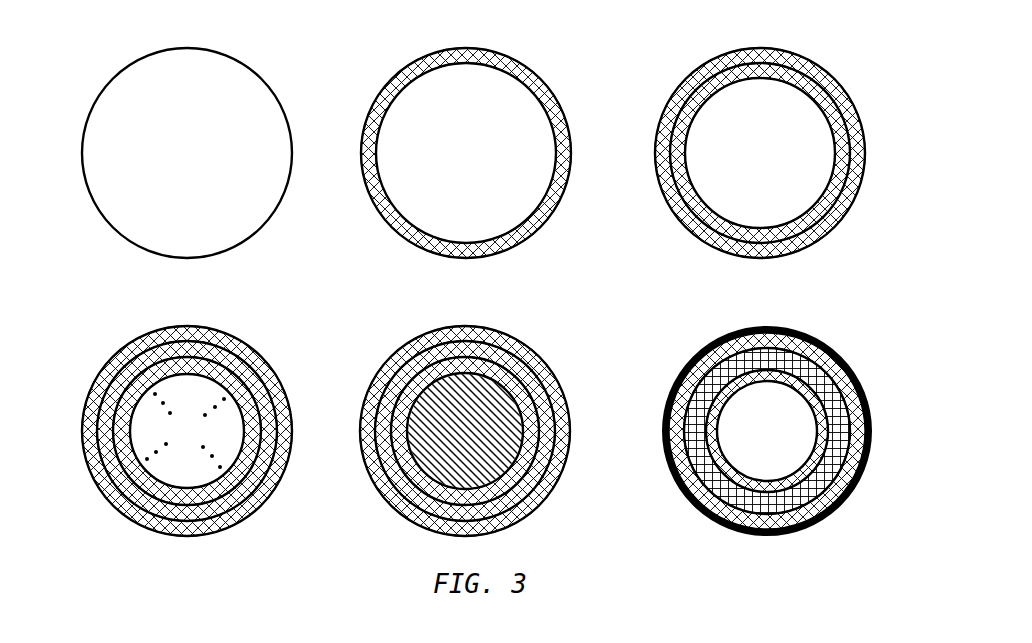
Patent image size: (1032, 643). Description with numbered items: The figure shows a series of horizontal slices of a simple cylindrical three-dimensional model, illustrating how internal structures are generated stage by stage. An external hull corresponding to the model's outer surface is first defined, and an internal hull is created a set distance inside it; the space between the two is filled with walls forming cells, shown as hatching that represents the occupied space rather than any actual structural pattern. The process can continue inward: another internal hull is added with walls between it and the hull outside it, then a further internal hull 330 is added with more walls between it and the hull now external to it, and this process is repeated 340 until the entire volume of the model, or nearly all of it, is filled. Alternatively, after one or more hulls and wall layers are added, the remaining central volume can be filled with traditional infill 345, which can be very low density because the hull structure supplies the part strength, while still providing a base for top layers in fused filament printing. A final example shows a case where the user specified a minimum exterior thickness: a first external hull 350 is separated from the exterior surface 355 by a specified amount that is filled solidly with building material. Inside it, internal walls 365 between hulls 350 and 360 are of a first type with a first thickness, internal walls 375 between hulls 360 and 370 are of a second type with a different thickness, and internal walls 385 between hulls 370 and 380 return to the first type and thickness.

The internal hull 330 is at (111, 372).
The repeated process 340 is at (212, 468).
The traditional infill 345 is at (499, 464).
The first external hull 350 is at (709, 345).
The exterior surface 355 is at (816, 347).
The hull 360 is at (755, 326).
The internal walls 365 is at (733, 513).
The hull 370 is at (830, 436).
The internal walls 375 is at (818, 370).
The hull 380 is at (867, 441).
The internal walls 385 is at (838, 510).